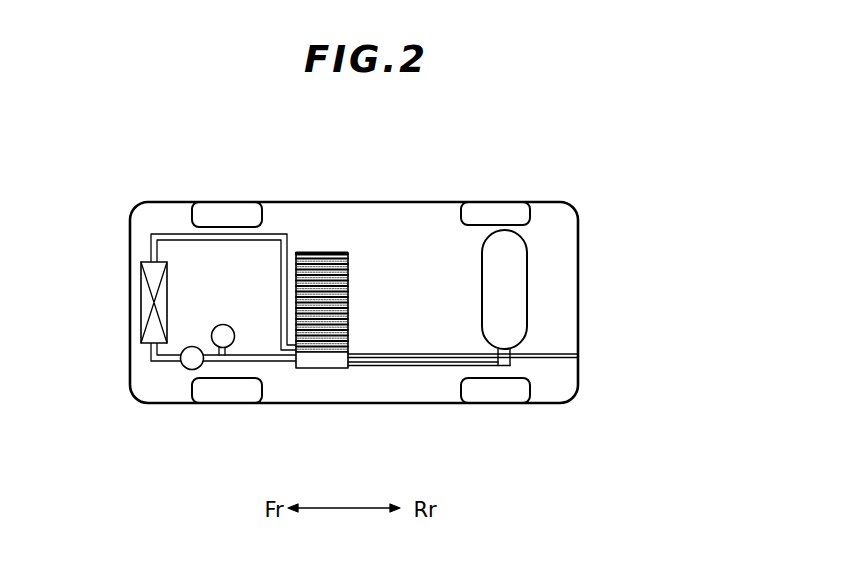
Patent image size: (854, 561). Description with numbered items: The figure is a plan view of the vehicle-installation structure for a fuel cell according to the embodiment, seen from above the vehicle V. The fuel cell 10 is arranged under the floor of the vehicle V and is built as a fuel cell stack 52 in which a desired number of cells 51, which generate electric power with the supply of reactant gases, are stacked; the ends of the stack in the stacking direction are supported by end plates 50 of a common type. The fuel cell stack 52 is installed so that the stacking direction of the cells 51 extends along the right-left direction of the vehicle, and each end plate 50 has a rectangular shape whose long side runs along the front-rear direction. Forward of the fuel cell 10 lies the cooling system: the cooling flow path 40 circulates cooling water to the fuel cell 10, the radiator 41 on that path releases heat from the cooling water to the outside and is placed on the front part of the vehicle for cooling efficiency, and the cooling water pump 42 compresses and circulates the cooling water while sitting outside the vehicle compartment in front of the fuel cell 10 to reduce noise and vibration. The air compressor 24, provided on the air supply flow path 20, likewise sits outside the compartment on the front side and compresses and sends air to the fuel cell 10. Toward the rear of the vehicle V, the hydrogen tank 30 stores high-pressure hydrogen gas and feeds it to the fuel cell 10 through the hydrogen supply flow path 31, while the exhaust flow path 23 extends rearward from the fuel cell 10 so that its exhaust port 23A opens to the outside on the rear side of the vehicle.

The vehicle V is at (545, 198).
The fuel cell 10 is at (365, 261).
The air supply flow path 20 is at (275, 363).
The exhaust flow path 23 is at (553, 365).
The exhaust port 23A is at (580, 355).
The air compressor 24 is at (225, 324).
The hydrogen tank 30 is at (528, 288).
The hydrogen supply flow path 31 is at (419, 367).
The cooling flow path 40 is at (177, 232).
The radiator 41 is at (141, 288).
The cooling water pump 42 is at (188, 368).
The end plate 50 is at (350, 254).
The cell 51 is at (349, 269).
The fuel cell stack 52 is at (349, 293).